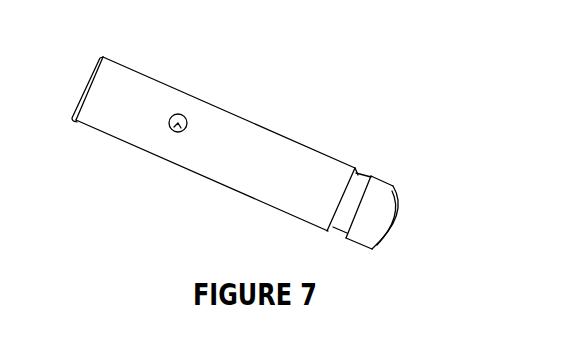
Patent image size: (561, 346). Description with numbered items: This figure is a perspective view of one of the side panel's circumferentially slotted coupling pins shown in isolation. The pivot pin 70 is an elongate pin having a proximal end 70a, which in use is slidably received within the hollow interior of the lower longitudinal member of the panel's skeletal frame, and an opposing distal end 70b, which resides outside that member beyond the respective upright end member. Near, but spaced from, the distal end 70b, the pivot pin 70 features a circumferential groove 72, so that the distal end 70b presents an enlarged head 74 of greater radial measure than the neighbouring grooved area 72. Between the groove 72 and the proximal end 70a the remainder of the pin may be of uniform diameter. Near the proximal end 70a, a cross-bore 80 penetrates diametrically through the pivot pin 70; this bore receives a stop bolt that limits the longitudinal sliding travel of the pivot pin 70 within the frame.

The pivot pin 70 is at (240, 141).
The proximal end 70a is at (93, 73).
The distal end 70b is at (386, 222).
The circumferential groove 72 is at (356, 189).
The enlarged head 74 is at (363, 236).
The cross-bore 80 is at (178, 122).